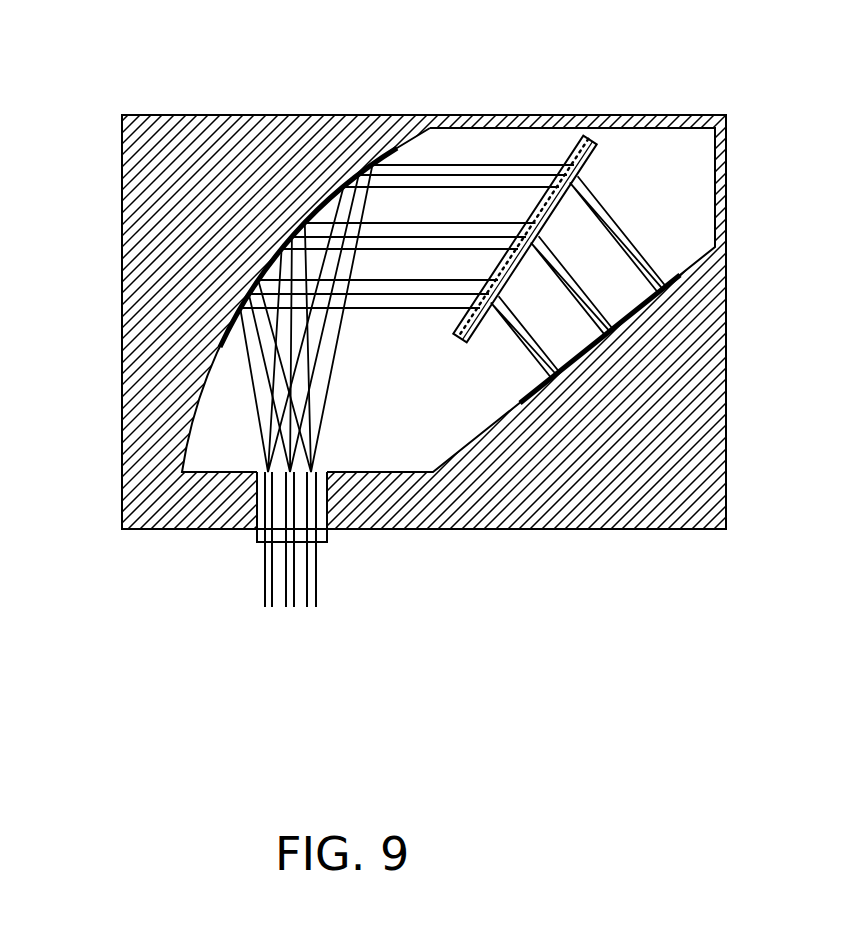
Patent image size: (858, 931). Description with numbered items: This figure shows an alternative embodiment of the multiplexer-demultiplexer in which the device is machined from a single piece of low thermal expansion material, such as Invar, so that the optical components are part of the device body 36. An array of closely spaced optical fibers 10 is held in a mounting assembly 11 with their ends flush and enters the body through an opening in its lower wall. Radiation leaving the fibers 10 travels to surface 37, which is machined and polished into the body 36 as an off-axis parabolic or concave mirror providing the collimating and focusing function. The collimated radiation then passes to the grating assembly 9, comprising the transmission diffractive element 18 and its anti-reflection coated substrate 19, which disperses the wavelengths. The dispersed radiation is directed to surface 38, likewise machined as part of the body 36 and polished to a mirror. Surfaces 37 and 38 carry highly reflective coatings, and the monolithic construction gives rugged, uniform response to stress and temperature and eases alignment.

The grating assembly 9 is at (582, 138).
The optical fiber array 10 is at (317, 568).
The mounting assembly 11 is at (253, 537).
The diffractive element 18 is at (592, 143).
The substrate 19 is at (605, 145).
The body 36 is at (192, 143).
The surface 37 is at (397, 148).
The surface 38 is at (683, 263).